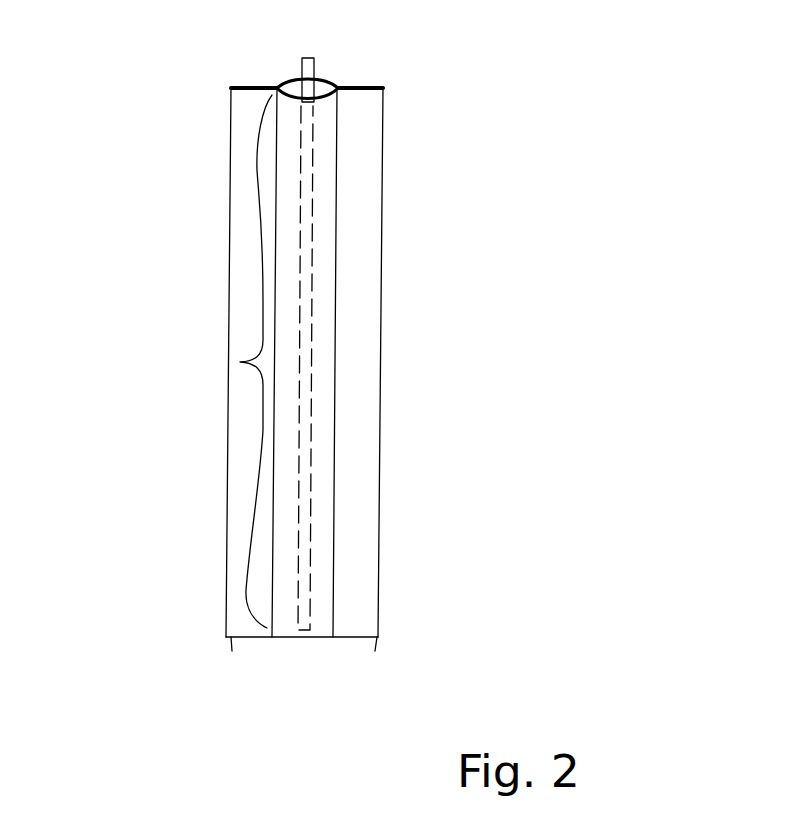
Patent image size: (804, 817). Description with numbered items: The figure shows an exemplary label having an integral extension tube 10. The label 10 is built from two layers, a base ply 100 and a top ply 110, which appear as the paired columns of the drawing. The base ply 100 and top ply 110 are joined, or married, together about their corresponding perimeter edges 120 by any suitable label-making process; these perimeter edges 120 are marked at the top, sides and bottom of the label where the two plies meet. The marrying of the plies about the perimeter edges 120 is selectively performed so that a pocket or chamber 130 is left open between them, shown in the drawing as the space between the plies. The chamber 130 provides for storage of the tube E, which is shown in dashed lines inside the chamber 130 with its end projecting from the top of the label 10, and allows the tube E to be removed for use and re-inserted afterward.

The label having an integral extension tube 10 is at (114, 737).
The base ply 100 is at (370, 88).
The top ply 110 is at (362, 148).
The perimeter edges 120 is at (277, 88).
The pocket or chamber 130 is at (240, 362).
The tube E is at (315, 88).